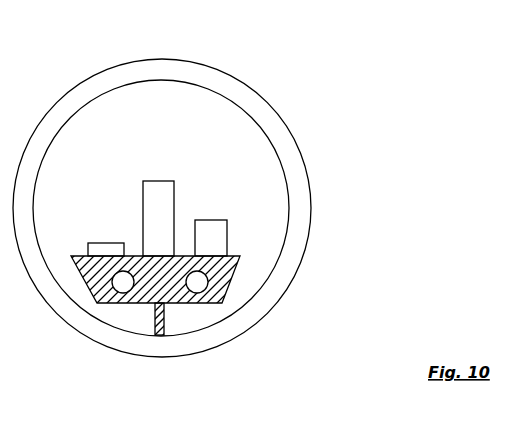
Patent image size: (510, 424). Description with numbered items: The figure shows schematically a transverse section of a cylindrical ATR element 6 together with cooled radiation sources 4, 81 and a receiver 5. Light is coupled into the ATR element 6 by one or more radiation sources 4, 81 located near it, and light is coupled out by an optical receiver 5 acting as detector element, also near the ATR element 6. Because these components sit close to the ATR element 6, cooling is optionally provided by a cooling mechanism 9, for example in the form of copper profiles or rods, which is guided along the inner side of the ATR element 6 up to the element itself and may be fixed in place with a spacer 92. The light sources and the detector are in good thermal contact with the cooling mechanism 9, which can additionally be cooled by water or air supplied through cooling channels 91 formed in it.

The radiation source 4 is at (106, 248).
The receiver 5 is at (210, 228).
The ATR element 6 is at (240, 91).
The cooling mechanism 9 is at (230, 265).
The radiation source 81 is at (156, 192).
The cooling channels 91 is at (201, 290).
The spacer 92 is at (164, 330).